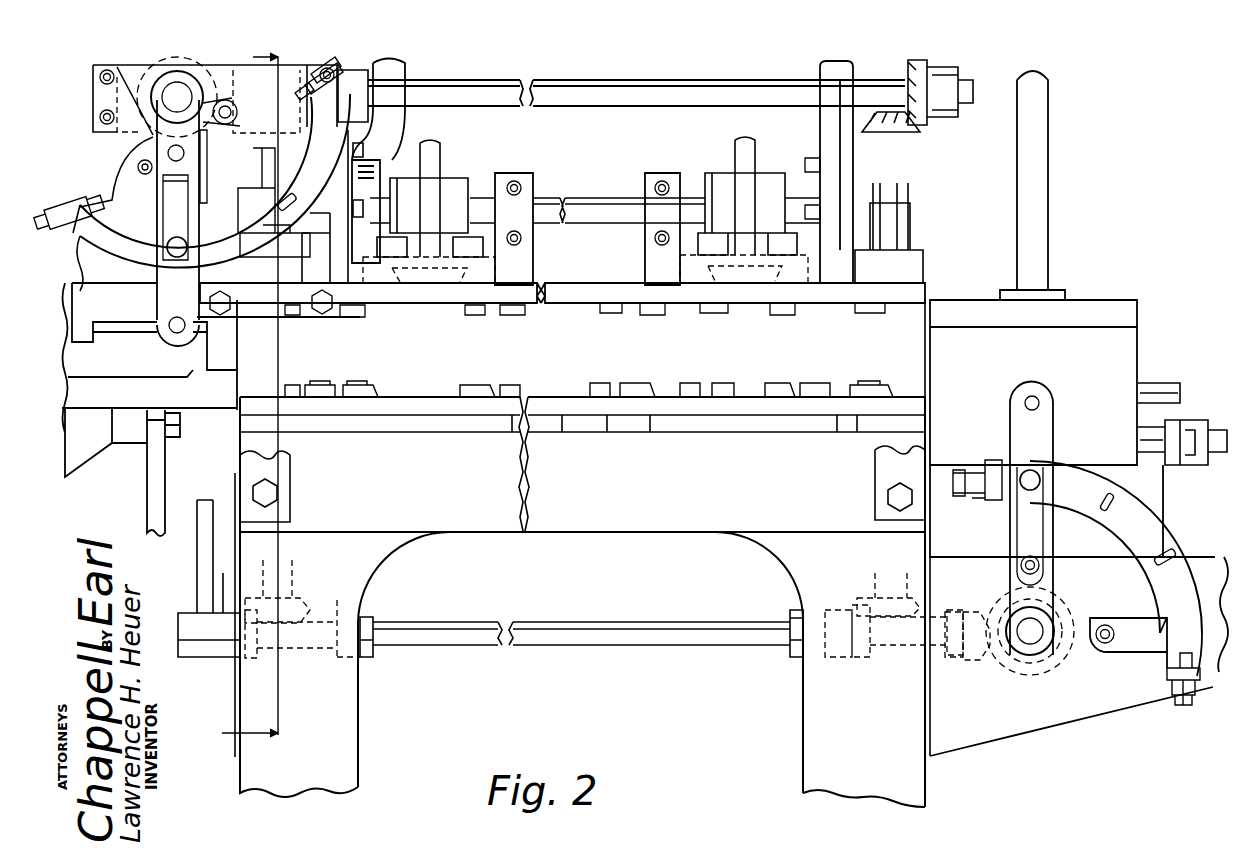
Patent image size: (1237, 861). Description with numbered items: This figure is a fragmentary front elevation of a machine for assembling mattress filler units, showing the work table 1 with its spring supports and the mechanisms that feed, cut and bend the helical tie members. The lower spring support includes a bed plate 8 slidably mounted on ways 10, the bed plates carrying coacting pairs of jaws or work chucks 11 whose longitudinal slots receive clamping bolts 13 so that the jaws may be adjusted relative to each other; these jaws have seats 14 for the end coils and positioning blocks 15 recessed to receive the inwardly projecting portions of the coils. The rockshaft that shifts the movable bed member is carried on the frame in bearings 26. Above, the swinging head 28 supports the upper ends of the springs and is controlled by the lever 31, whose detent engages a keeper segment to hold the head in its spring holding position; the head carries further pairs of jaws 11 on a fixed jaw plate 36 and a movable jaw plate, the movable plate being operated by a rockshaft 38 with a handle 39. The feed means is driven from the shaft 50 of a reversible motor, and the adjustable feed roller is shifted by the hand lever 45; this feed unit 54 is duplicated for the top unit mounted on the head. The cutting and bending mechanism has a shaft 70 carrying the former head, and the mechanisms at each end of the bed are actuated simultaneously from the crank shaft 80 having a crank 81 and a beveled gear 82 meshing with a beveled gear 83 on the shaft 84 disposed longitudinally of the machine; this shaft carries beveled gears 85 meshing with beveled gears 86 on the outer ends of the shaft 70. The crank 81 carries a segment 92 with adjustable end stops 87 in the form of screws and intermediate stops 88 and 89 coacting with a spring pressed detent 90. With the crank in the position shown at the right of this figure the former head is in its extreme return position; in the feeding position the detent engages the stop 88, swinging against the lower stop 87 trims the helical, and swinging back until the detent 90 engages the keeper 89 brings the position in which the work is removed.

The work table 1 is at (603, 532).
The bed plate 8 is at (737, 408).
The ways 10 is at (607, 425).
The jaws or work chucks 11 is at (393, 318).
The clamping bolts 13 is at (350, 385).
The seats 14 is at (235, 404).
The positioning blocks 15 is at (320, 318).
The bearings 26 is at (290, 455).
The swinging head 28 is at (470, 183).
The lever 31 is at (165, 467).
The fixed jaw plate 36 is at (735, 303).
The rockshaft 38 is at (600, 200).
The handle 39 is at (398, 124).
The hand lever 45 is at (1035, 197).
The shaft 50 is at (1218, 425).
The feed unit 54 is at (1130, 352).
The shaft 70 is at (905, 203).
The crank shaft 80 is at (1040, 648).
The crank 81 is at (1055, 578).
The beveled gear 82 is at (1028, 670).
The beveled gear 83 is at (1000, 662).
The shaft 84 is at (675, 625).
The beveled gears 85 is at (928, 112).
The beveled gears 86 is at (915, 130).
The adjustable end stops 87 is at (1003, 462).
The intermediate stop 88 is at (1167, 563).
The intermediate stop 89 is at (1105, 510).
The spring pressed detent 90 is at (1037, 476).
The segment 92 is at (1155, 532).